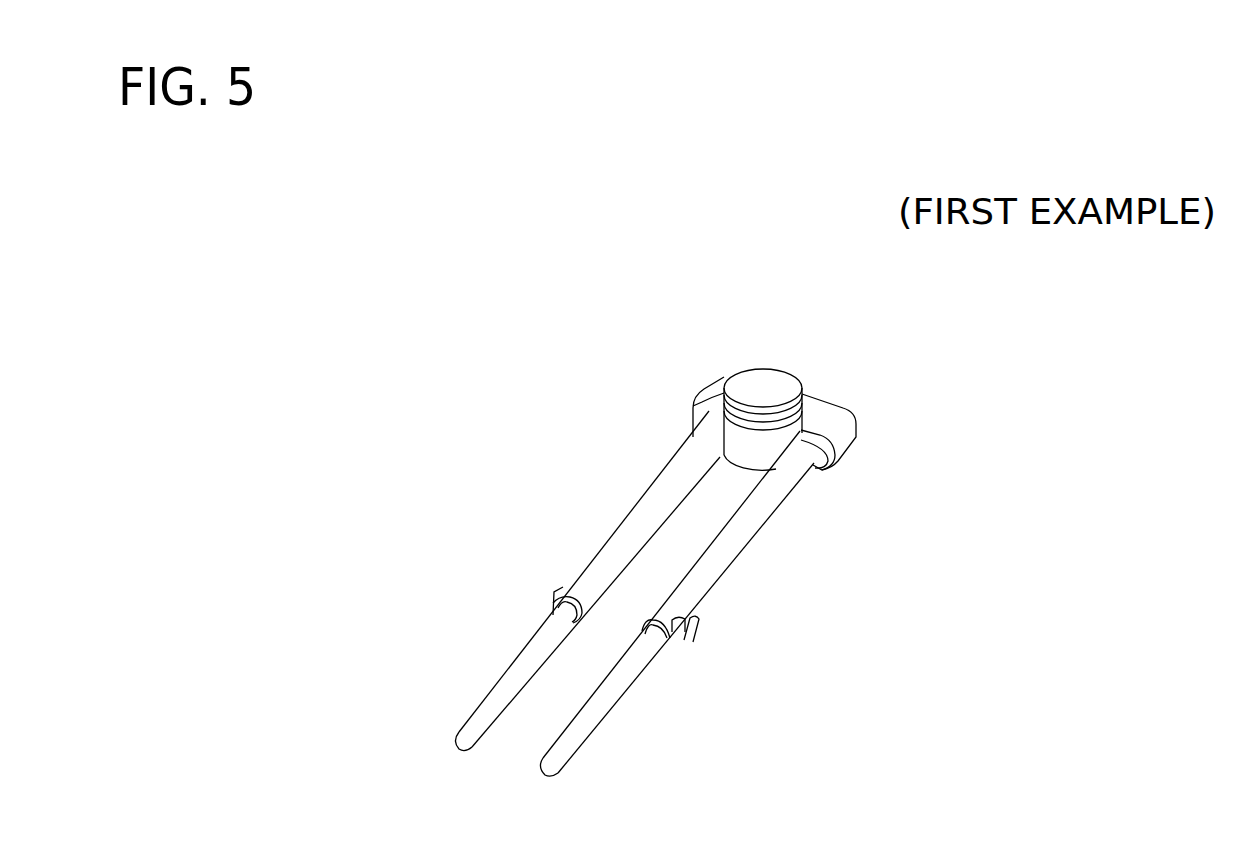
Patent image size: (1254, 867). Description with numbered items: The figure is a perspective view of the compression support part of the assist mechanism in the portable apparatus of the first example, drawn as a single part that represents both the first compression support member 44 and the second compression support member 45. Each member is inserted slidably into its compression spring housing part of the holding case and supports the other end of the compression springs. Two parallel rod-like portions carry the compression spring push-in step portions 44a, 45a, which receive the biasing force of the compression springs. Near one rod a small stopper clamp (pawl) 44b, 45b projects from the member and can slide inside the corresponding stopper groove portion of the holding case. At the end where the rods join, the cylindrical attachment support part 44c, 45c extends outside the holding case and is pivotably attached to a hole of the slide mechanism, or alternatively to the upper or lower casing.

The first compression support member 44 is at (750, 533).
The second compression support member 45 is at (1043, 320).
The compression spring push-in step portion 44a is at (648, 593).
The compression spring push-in step portion 45a is at (661, 638).
The stopper clamp (pawl) 44b is at (752, 638).
The stopper clamp (pawl) 45b is at (678, 633).
The attachment support part 44c is at (794, 393).
The attachment support part 45c is at (766, 381).